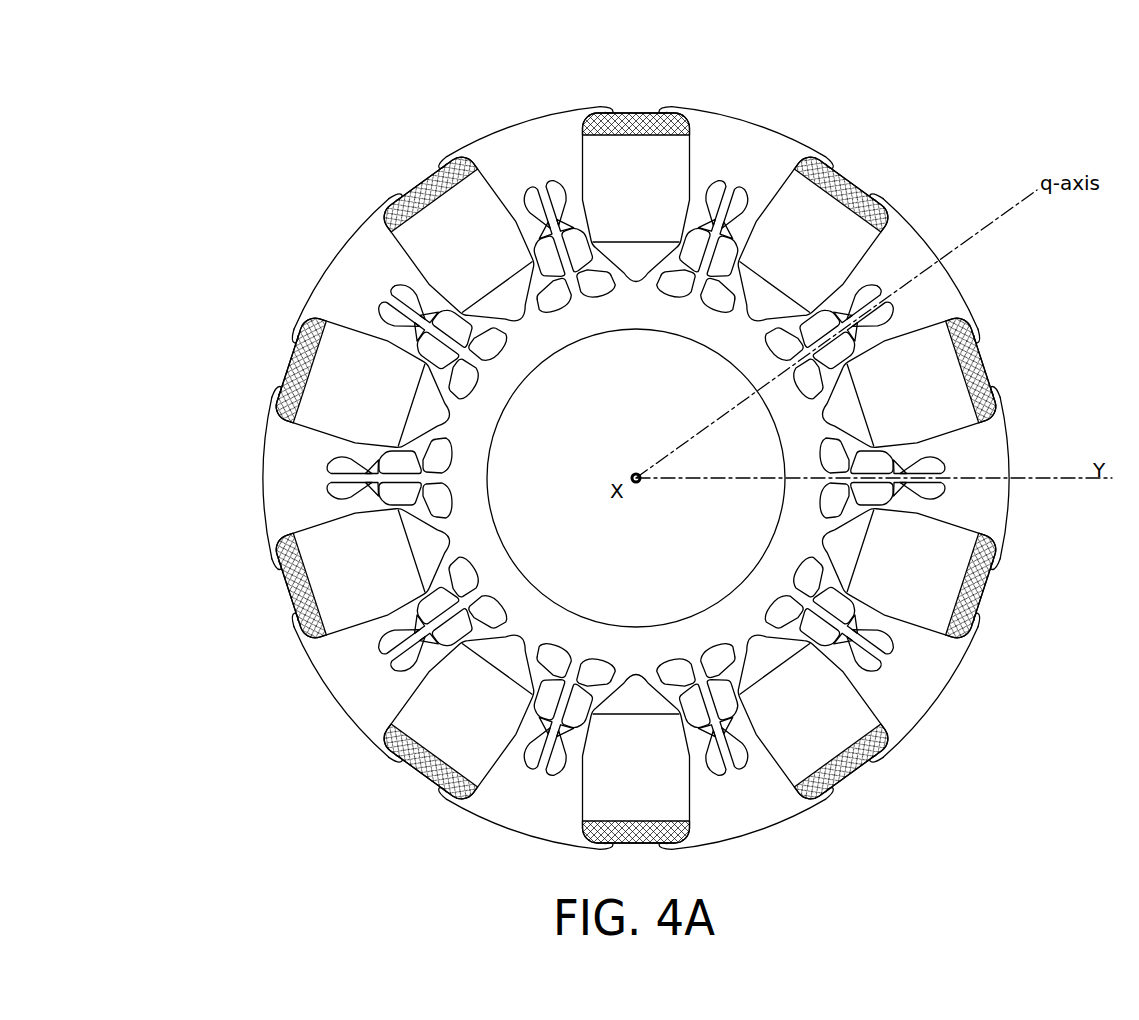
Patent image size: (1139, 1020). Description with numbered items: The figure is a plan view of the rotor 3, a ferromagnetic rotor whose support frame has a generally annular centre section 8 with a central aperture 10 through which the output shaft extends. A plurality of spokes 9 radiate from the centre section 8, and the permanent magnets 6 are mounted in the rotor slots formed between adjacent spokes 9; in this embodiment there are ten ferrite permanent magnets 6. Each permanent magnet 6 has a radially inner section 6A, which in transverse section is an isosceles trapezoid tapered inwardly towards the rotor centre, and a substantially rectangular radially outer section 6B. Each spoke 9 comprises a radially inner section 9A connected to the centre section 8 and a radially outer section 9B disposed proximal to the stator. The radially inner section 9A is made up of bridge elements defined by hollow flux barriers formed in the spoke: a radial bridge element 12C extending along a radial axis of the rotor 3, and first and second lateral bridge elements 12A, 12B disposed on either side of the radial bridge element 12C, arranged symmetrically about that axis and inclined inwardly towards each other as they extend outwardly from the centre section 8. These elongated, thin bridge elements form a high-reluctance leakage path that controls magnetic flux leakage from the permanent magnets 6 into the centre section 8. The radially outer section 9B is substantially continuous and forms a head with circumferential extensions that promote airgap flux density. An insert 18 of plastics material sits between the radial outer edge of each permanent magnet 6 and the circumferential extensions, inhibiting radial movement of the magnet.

The rotor 3 is at (800, 117).
The insert 18 is at (845, 190).
The spoke 9 is at (928, 303).
The radially inner section 9A is at (848, 290).
The radially outer section 9B is at (913, 255).
The permanent magnet 6 is at (903, 395).
The radially inner section 6A is at (882, 410).
The radially outer section 6B is at (953, 392).
The centre section 8 is at (468, 460).
The central aperture 10 is at (695, 588).
The first lateral bridge element 12A is at (420, 518).
The second lateral bridge element 12B is at (427, 438).
The radial bridge element 12C is at (360, 475).